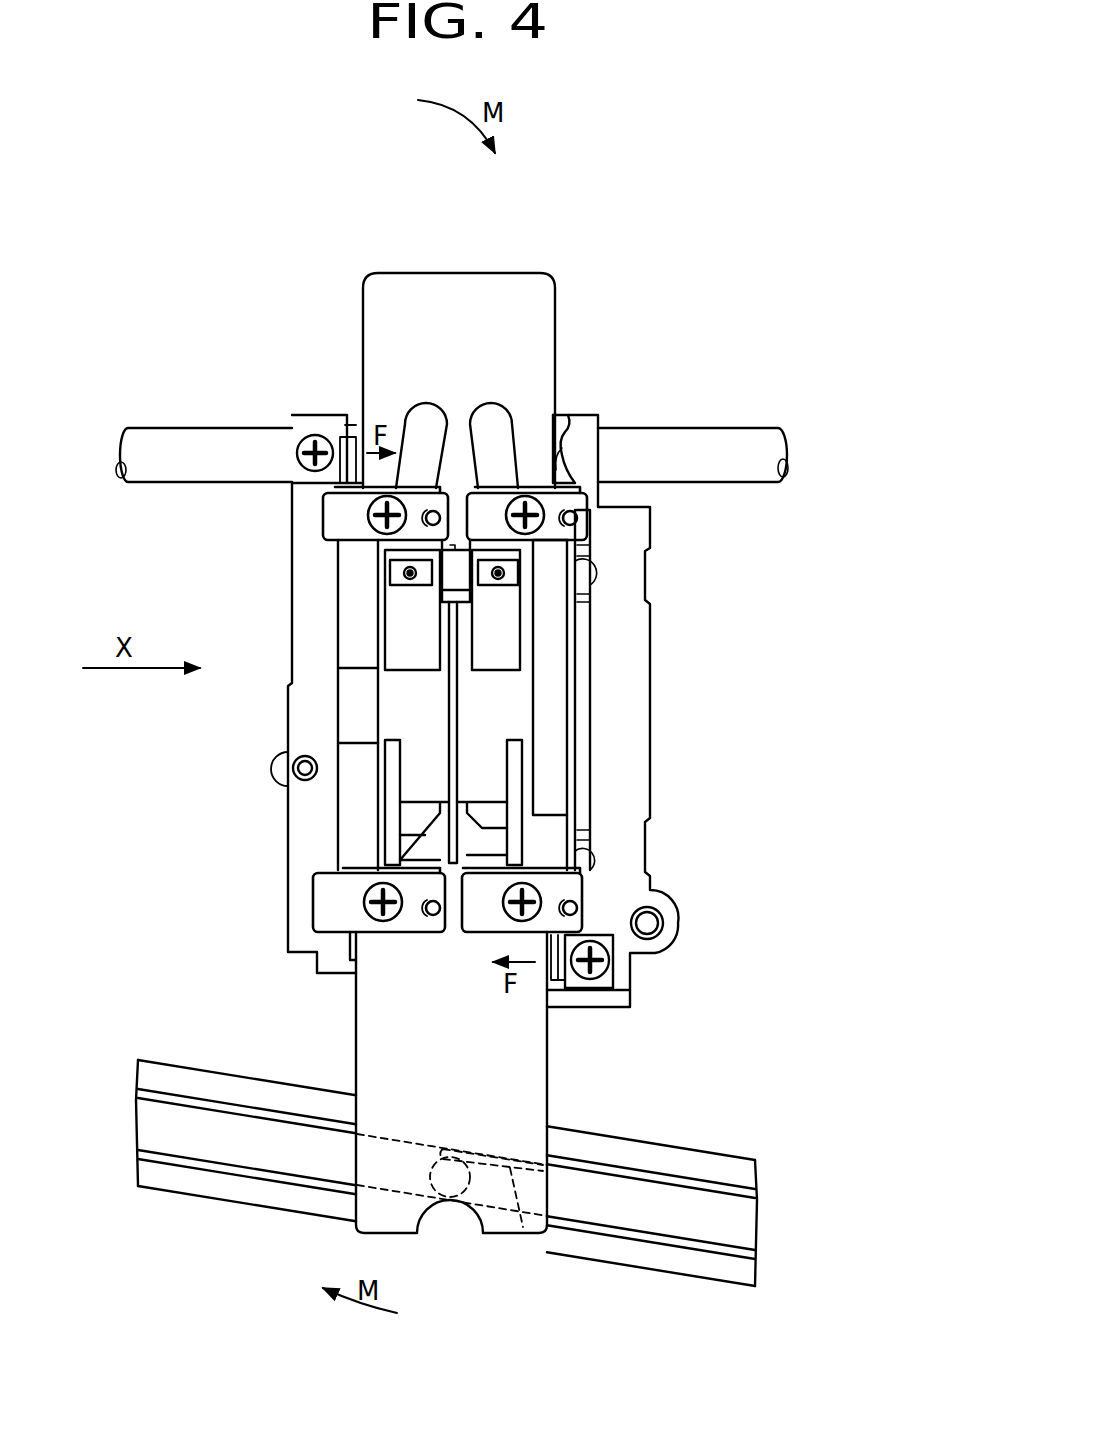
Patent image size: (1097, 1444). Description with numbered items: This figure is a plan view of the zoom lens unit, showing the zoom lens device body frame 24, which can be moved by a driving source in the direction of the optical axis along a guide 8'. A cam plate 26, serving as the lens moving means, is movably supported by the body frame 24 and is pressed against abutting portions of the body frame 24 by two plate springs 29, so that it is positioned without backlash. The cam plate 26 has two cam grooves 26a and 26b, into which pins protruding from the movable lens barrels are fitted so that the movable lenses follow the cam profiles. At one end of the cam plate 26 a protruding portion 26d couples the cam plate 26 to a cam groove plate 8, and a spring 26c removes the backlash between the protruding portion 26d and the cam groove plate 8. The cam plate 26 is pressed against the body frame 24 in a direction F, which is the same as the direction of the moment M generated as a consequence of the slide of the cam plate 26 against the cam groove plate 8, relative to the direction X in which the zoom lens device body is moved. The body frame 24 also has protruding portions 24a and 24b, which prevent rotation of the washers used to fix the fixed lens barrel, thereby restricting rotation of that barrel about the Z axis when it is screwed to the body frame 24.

The cam groove plate 8 is at (446, 1173).
The guide 8' is at (452, 498).
The zoom lens device body frame 24 is at (635, 750).
The protruding portion 24a is at (347, 952).
The protruding portion 24b is at (557, 453).
The cam plate 26 is at (440, 290).
The cam groove 26a is at (422, 418).
The cam groove 26b is at (488, 420).
The spring 26c is at (517, 1213).
The protruding portion 26d is at (450, 1200).
The plate spring 29 is at (328, 432).